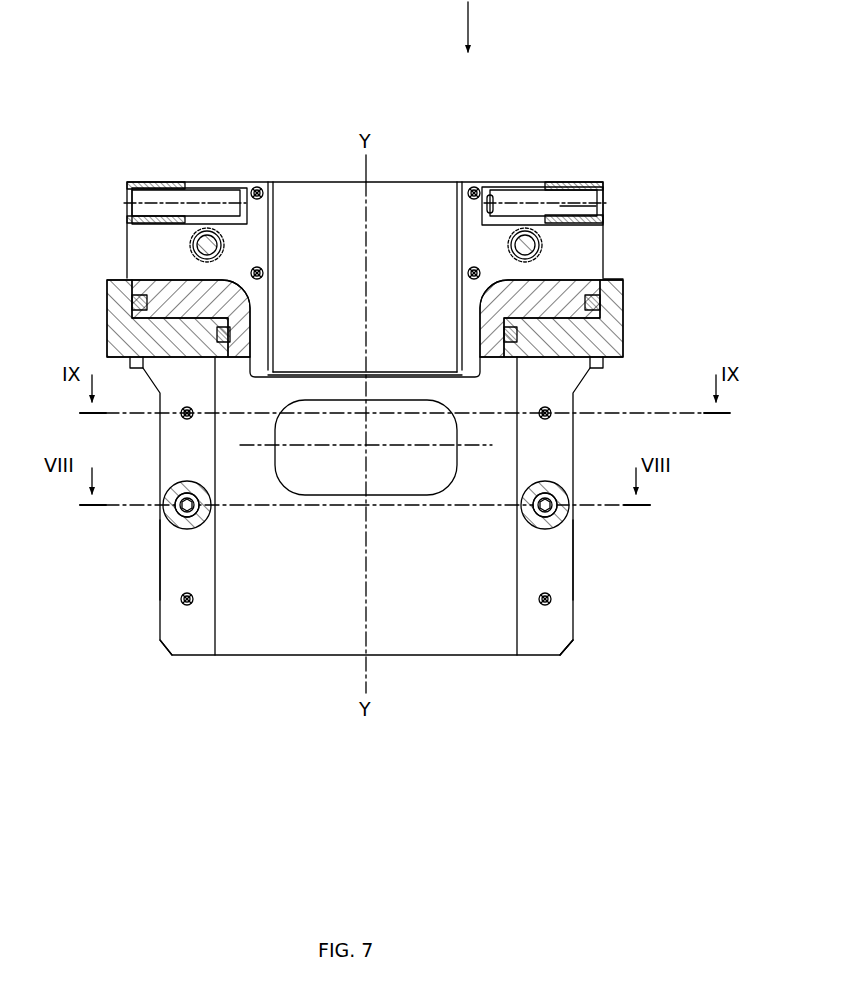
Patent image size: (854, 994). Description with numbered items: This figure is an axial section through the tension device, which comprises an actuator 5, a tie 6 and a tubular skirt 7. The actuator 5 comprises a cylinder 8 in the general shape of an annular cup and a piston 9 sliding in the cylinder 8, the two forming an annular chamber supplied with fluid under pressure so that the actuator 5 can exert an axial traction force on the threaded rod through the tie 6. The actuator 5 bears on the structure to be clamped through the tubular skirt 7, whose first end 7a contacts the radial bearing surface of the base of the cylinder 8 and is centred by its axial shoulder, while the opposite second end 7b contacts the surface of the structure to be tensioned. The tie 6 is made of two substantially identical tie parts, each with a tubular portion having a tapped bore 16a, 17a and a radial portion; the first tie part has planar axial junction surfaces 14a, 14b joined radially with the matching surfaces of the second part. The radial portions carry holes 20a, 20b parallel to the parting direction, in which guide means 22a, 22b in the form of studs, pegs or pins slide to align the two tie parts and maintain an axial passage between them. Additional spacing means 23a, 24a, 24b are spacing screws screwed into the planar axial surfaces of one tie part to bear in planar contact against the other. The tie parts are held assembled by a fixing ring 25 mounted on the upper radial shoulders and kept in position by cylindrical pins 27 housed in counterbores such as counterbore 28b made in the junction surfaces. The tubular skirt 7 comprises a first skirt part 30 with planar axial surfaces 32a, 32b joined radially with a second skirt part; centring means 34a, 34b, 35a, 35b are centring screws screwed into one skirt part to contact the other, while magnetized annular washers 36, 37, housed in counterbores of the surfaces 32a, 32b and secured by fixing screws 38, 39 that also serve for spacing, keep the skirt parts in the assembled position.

The actuator 5 is at (389, 318).
The tie 6 is at (603, 258).
The tubular skirt 7 is at (575, 578).
The first end of tubular skirt 7a is at (598, 362).
The second end of tubular skirt 7b is at (560, 658).
The cylinder 8 is at (612, 341).
The piston 9 is at (605, 278).
The axial junction surface of first tie part 14a is at (150, 235).
The axial junction surface of first tie part 14b is at (580, 232).
The bore of tubular portion 16a is at (275, 203).
The bore of tubular portion 17a is at (457, 203).
The hole 20a is at (223, 242).
The hole 20b is at (512, 243).
The guide means 22a is at (192, 252).
The guide means 22b is at (540, 246).
The additional spacing means 23a is at (256, 187).
The additional spacing means 24a is at (474, 187).
The additional spacing means 24b is at (468, 276).
The fixing ring 25 is at (596, 185).
The cylindrical pin 27 is at (515, 200).
The counterbore 28b is at (567, 208).
The first skirt part 30 is at (163, 641).
The planar axial surface of first skirt part 32a is at (163, 562).
The planar axial surface of first skirt part 32b is at (570, 562).
The centring means 34a is at (180, 420).
The centring means 34b is at (180, 603).
The centring means 35a is at (552, 419).
The centring means 35b is at (552, 604).
The magnetized annular washer 36 is at (170, 497).
The magnetized annular washer 37 is at (562, 497).
The fixing screw 38 is at (176, 520).
The fixing screw 39 is at (558, 520).